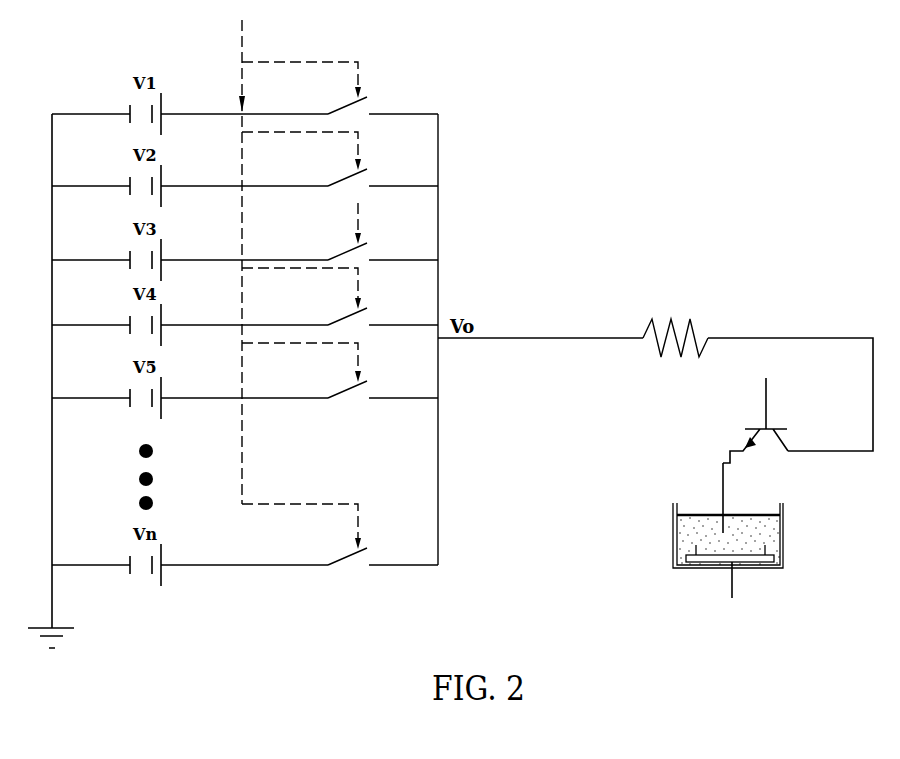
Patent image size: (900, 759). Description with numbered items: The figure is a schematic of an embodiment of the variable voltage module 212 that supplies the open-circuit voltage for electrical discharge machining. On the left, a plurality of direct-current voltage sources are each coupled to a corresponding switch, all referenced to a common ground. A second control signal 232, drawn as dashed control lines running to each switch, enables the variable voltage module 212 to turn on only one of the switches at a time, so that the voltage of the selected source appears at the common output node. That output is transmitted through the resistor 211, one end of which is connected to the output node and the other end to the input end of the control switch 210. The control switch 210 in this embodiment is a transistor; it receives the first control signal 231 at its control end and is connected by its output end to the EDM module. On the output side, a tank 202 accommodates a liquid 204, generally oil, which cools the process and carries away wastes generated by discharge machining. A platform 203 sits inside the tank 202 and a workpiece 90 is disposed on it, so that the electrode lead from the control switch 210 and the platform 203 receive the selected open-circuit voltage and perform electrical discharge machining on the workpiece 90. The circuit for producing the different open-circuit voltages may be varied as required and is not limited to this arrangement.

The second control signal 232 is at (240, 68).
The variable voltage module 212 is at (441, 111).
The resistor 211 is at (656, 344).
The first control signal 231 is at (764, 414).
The control switch 210 is at (786, 429).
The workpiece 90 is at (718, 548).
The liquid 204 is at (765, 531).
The tank 202 is at (784, 558).
The platform 203 is at (750, 566).